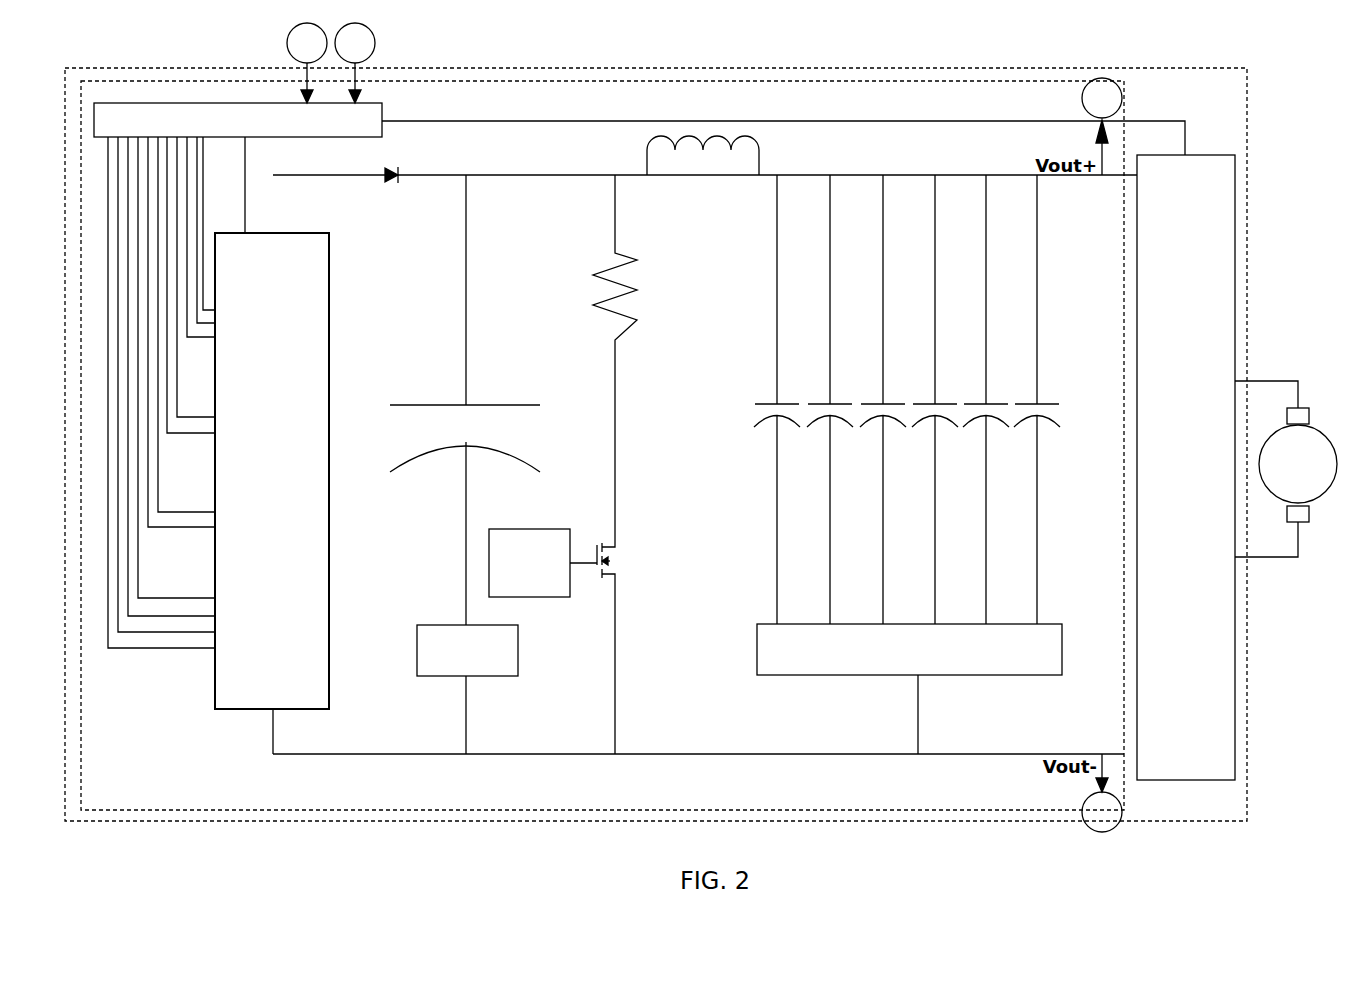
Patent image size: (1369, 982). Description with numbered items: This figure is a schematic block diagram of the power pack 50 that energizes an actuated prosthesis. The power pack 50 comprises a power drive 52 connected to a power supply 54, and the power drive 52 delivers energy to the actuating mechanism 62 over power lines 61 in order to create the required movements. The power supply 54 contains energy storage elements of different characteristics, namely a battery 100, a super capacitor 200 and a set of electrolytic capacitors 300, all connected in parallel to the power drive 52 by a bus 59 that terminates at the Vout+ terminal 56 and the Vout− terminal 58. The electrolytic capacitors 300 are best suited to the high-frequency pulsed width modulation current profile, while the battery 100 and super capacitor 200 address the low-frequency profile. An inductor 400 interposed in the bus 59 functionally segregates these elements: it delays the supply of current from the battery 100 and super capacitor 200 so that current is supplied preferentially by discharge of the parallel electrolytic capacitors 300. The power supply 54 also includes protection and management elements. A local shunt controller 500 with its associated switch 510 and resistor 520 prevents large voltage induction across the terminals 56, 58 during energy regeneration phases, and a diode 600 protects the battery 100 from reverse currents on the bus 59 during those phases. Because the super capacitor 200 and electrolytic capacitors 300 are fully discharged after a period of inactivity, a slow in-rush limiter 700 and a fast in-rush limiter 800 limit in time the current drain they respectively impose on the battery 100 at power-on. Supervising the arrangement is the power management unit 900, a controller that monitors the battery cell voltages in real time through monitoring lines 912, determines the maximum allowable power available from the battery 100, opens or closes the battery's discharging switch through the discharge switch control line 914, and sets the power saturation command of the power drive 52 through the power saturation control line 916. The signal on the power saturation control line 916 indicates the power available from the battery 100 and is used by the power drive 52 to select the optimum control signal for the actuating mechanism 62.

The power pack 50 is at (818, 68).
The power drive 52 is at (1235, 208).
The power supply 54 is at (745, 81).
The Vout+ terminal 56 is at (704, 99).
The Vout− terminal 58 is at (728, 427).
The bus 59 is at (910, 174).
The power lines 61 is at (1275, 381).
The actuating mechanism 62 is at (1328, 436).
The battery 100 is at (329, 332).
The super capacitor 200 is at (487, 404).
The electrolytic capacitors 300 is at (781, 403).
The inductor 400 is at (763, 148).
The local shunt controller 500 is at (548, 529).
The switch 510 is at (615, 545).
The resistor 520 is at (628, 255).
The diode 600 is at (392, 180).
The slow in-rush limiter 700 is at (518, 645).
The fast in-rush limiter 800 is at (757, 646).
The power management unit 900 is at (175, 103).
The monitoring lines 912 is at (133, 685).
The discharge switch control line 914 is at (245, 140).
The power saturation control line 916 is at (515, 120).